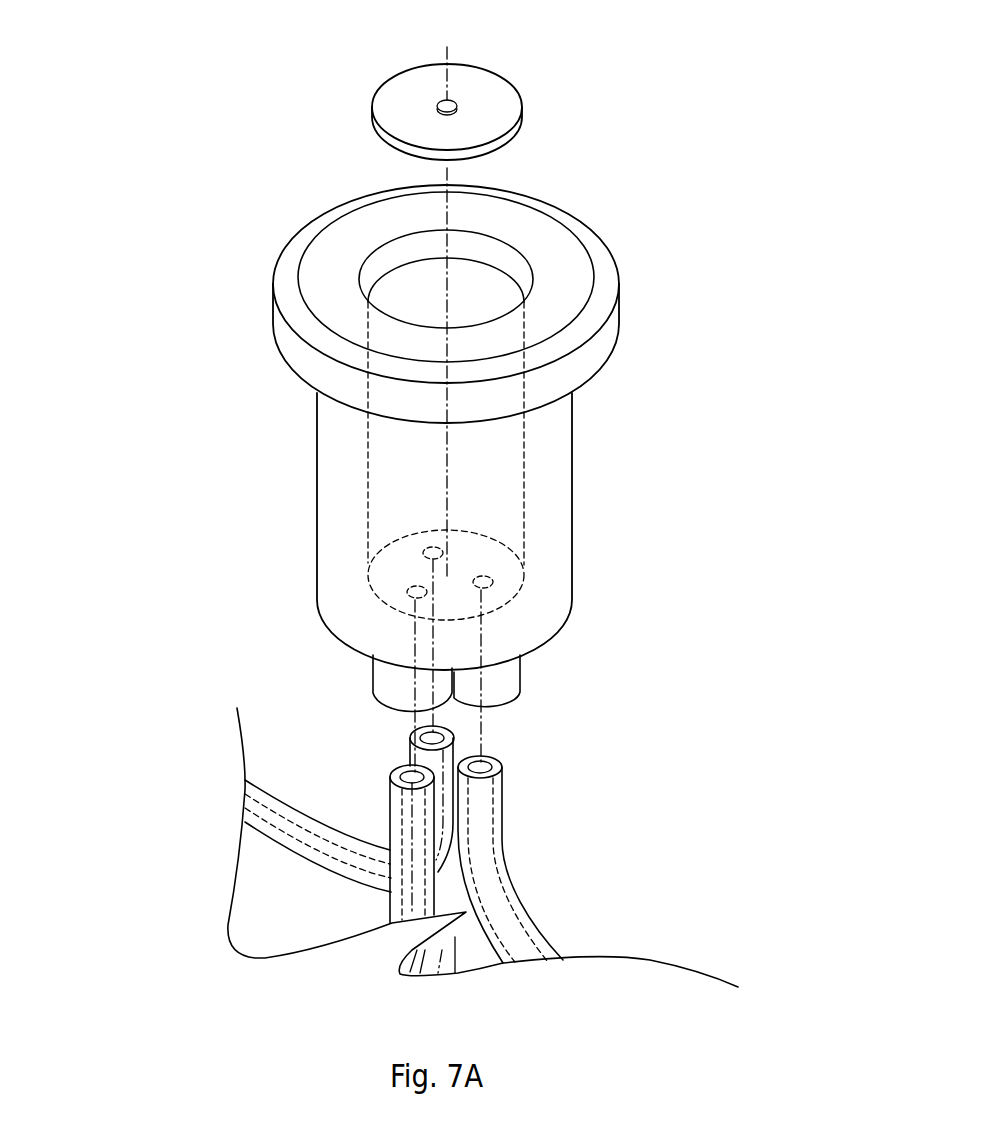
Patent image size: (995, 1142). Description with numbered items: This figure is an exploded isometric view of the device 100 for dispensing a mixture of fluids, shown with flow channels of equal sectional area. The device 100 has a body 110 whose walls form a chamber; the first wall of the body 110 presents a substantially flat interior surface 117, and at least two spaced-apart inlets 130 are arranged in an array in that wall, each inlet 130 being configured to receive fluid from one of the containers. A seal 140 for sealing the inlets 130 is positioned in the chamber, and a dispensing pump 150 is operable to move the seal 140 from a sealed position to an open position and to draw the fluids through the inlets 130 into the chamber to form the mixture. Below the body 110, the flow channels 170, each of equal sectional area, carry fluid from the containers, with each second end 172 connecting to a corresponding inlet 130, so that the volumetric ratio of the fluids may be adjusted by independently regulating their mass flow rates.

The device 100 is at (112, 70).
The body 110 is at (628, 565).
The interior surface 117 is at (650, 454).
The inlets 130 is at (423, 551).
The seal 140 is at (500, 120).
The dispensing pump 150 is at (406, 286).
The flow channels 170 is at (298, 845).
The second end 172 is at (397, 730).